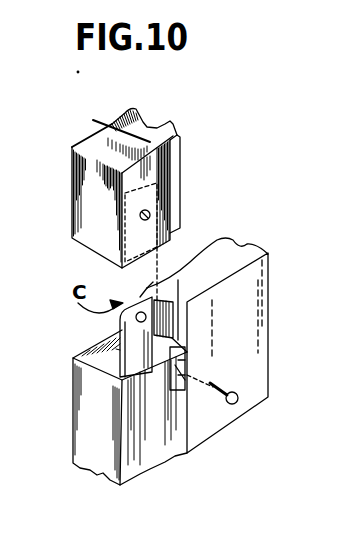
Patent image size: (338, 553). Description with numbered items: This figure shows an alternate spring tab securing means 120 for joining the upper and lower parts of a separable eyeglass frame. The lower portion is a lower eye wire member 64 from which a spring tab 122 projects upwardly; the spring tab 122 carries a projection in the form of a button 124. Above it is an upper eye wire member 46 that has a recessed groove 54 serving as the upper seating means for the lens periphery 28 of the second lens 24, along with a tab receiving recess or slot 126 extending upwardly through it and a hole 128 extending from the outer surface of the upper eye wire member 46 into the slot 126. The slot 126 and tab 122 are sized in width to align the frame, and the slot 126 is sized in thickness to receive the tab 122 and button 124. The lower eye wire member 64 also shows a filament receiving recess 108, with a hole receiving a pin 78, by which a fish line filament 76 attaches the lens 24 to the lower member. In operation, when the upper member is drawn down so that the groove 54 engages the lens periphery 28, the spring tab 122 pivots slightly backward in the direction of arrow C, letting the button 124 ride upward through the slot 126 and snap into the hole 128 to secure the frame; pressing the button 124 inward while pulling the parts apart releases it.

The second lens 24 is at (230, 260).
The lens periphery 28 is at (158, 300).
The second upper eye wire member 46 is at (93, 203).
The recessed groove 54 is at (148, 123).
The second lower eye wire member 64 is at (102, 458).
The fish line filament 76 is at (190, 298).
The attachment pin 78 is at (212, 386).
The filament receiving recess 108 is at (188, 375).
The spring tab securing means 120 is at (72, 358).
The spring tab 122 is at (137, 344).
The button 124 is at (120, 330).
The tab receiving recess 126 is at (125, 262).
The hole 128 is at (143, 221).